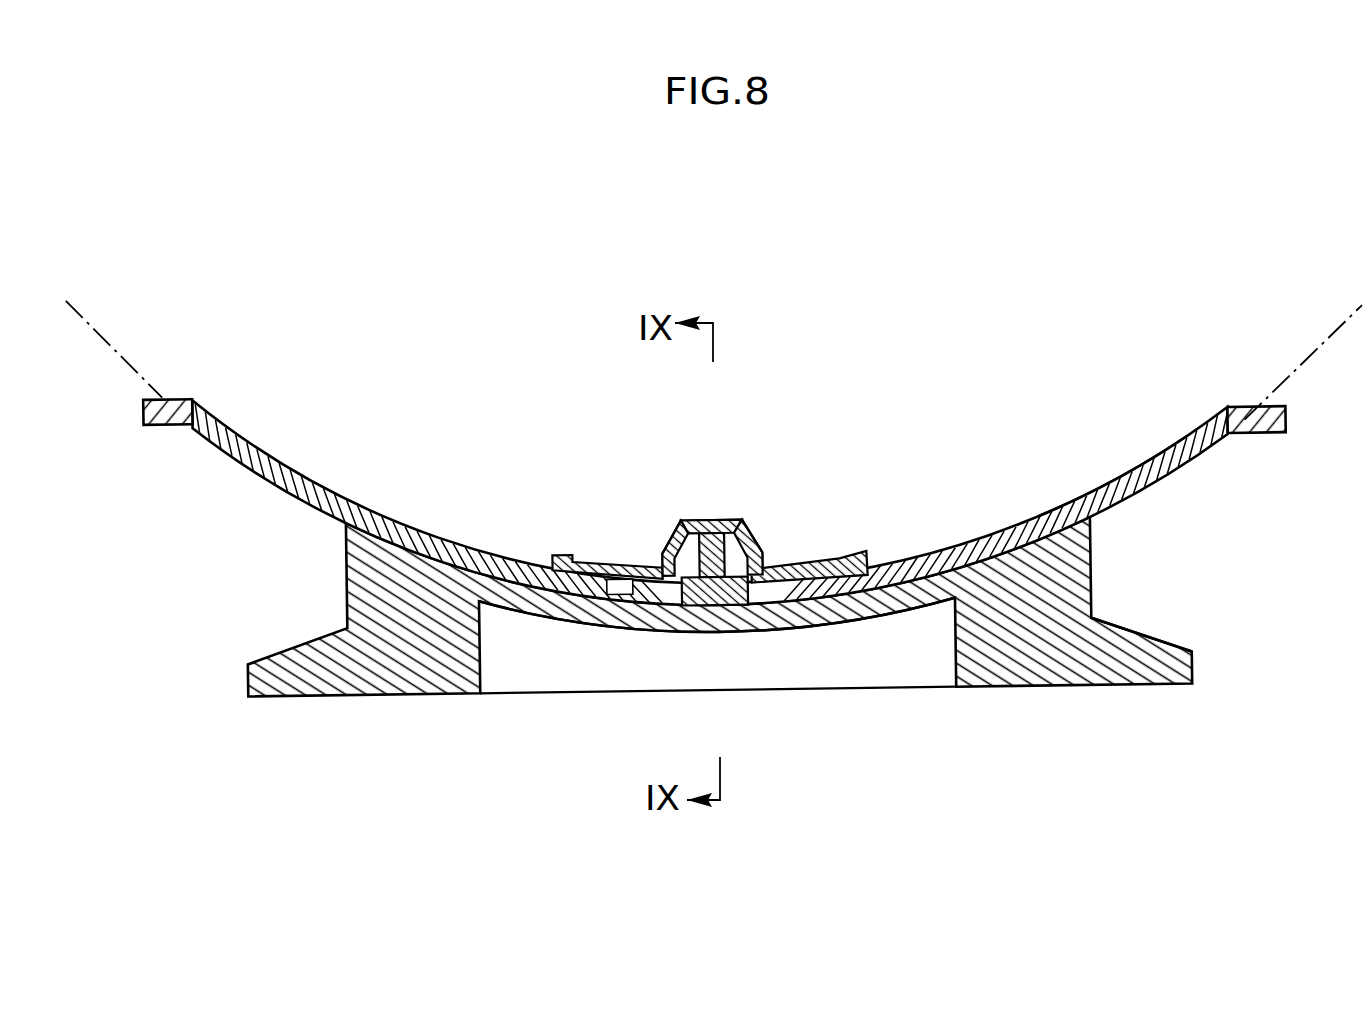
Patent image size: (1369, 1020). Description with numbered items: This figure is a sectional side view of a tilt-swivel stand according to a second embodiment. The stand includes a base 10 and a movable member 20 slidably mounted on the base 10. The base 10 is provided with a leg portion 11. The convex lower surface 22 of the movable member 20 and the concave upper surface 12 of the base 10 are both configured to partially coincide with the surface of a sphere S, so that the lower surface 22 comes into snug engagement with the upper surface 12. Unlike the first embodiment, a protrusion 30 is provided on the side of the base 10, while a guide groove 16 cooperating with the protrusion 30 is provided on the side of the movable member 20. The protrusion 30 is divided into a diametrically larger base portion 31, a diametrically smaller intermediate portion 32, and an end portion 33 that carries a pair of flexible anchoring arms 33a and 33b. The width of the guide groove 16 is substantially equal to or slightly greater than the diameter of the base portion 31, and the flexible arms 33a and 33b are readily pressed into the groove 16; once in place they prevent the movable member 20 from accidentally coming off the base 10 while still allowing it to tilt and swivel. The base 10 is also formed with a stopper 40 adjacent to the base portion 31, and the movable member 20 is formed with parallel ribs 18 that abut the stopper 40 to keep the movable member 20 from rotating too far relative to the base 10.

The base 10 is at (900, 697).
The leg portion 11 is at (1137, 628).
The concave upper surface 12 is at (997, 557).
The guide groove 16 is at (743, 590).
The parallel ribs 18 is at (573, 553).
The movable member 20 is at (1096, 483).
The convex lower surface 22 is at (1140, 493).
The protrusion 30 is at (717, 513).
The base portion 31 is at (677, 527).
The intermediate portion 32 is at (752, 525).
The end portion 33 is at (702, 520).
The flexible anchoring arm 33a is at (667, 543).
The flexible anchoring arm 33b is at (773, 530).
The stopper 40 is at (617, 607).
The sphere S is at (117, 360).